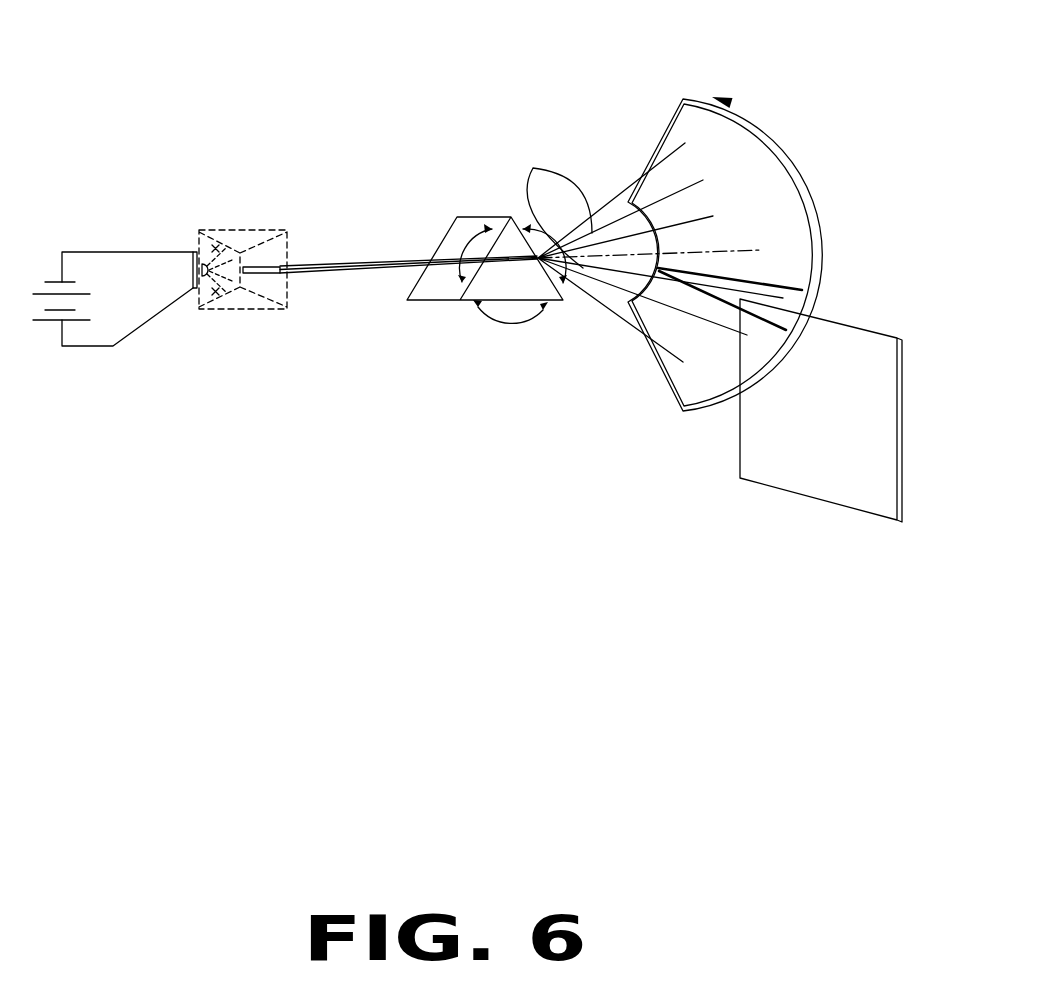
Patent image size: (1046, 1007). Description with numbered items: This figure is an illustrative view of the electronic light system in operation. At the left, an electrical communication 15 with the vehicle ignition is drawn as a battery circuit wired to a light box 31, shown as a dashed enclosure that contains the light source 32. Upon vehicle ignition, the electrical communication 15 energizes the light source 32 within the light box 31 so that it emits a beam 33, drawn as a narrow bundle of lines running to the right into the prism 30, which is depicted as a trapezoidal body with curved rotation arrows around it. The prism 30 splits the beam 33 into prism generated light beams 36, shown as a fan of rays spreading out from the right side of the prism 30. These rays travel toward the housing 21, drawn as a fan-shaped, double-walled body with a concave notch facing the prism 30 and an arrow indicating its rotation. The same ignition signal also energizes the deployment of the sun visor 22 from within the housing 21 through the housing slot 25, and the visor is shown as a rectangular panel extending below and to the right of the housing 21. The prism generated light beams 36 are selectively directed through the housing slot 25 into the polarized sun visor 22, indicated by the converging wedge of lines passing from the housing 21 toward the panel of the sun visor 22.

The electrical communication 15 is at (118, 252).
The light box 31 is at (235, 228).
The light source 32 is at (192, 288).
The beam 33 is at (347, 272).
The prism 30 is at (503, 302).
The prism generated light beams 36 is at (533, 168).
The housing 21 is at (692, 93).
The housing slot 25 is at (785, 283).
The sun visor 22 is at (760, 447).